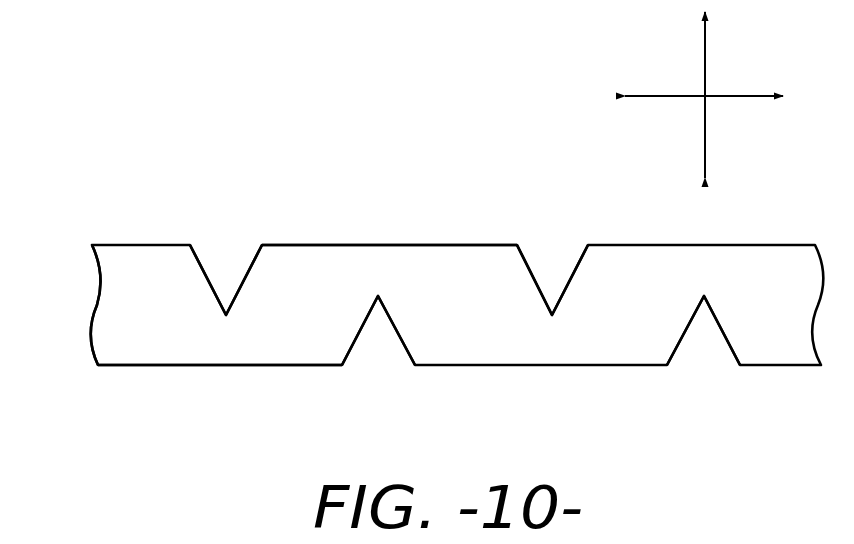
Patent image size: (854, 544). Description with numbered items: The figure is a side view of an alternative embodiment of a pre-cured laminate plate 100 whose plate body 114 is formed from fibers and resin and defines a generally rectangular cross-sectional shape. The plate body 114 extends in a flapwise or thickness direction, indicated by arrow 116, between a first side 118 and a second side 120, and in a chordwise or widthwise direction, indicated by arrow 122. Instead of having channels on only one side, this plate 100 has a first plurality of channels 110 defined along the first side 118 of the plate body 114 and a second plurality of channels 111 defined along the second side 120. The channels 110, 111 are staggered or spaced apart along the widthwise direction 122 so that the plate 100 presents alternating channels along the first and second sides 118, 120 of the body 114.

The plate 100 is at (453, 198).
The channels 110 is at (223, 252).
The second plurality of channels 111 is at (378, 347).
The plate body 114 is at (128, 297).
The arrow 116 is at (707, 68).
The first side 118 is at (358, 246).
The second side 120 is at (192, 365).
The arrow 122 is at (676, 92).